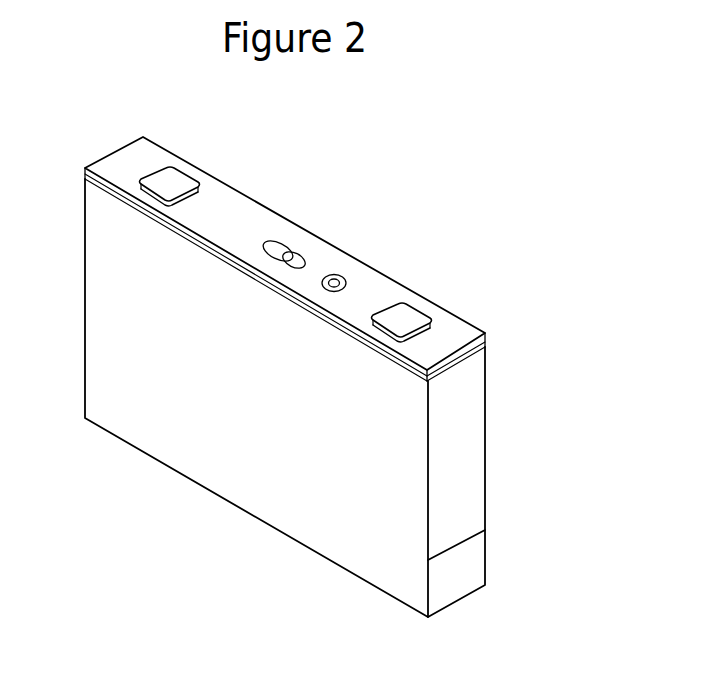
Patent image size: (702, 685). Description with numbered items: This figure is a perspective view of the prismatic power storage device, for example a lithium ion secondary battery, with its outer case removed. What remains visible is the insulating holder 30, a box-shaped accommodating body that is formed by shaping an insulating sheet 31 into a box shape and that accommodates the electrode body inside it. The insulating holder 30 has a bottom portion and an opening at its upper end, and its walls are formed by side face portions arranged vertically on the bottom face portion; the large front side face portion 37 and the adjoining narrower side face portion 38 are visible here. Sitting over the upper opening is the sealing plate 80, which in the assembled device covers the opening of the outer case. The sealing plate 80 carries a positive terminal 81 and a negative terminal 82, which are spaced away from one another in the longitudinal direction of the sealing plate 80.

The insulating holder 30 is at (319, 357).
The insulating sheet 31 is at (465, 422).
The side face portion 37 is at (298, 500).
The side face portion 38 is at (463, 488).
The sealing plate 80 is at (225, 198).
The positive terminal 81 is at (398, 317).
The negative terminal 82 is at (177, 179).